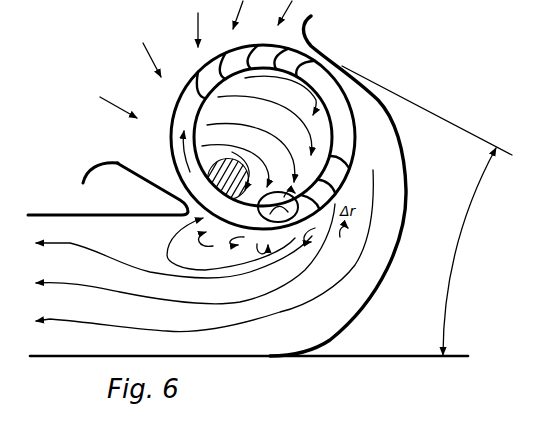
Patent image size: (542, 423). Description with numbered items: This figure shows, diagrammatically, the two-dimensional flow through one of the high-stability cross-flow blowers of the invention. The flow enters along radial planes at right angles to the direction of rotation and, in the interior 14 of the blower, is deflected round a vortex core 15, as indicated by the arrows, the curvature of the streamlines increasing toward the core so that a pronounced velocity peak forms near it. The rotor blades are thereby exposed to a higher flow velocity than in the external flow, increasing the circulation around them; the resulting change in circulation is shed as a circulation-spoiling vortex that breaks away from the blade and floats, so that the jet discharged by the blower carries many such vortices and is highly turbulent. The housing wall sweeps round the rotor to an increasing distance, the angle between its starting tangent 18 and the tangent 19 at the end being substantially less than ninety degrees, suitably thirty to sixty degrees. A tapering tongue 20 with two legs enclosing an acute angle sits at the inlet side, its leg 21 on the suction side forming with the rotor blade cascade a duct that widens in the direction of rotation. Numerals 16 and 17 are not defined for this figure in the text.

The interior of the blower 14 is at (295, 132).
The vortex core 15 is at (234, 180).
The vortex loop at annulus outlet 16 is at (282, 228).
The spiral housing wall 17 is at (395, 128).
The starting tangent 18 is at (481, 137).
The tangent at the end 19 is at (383, 355).
The tapering tongue 20 is at (108, 189).
The leg on the suction side 21 is at (117, 163).